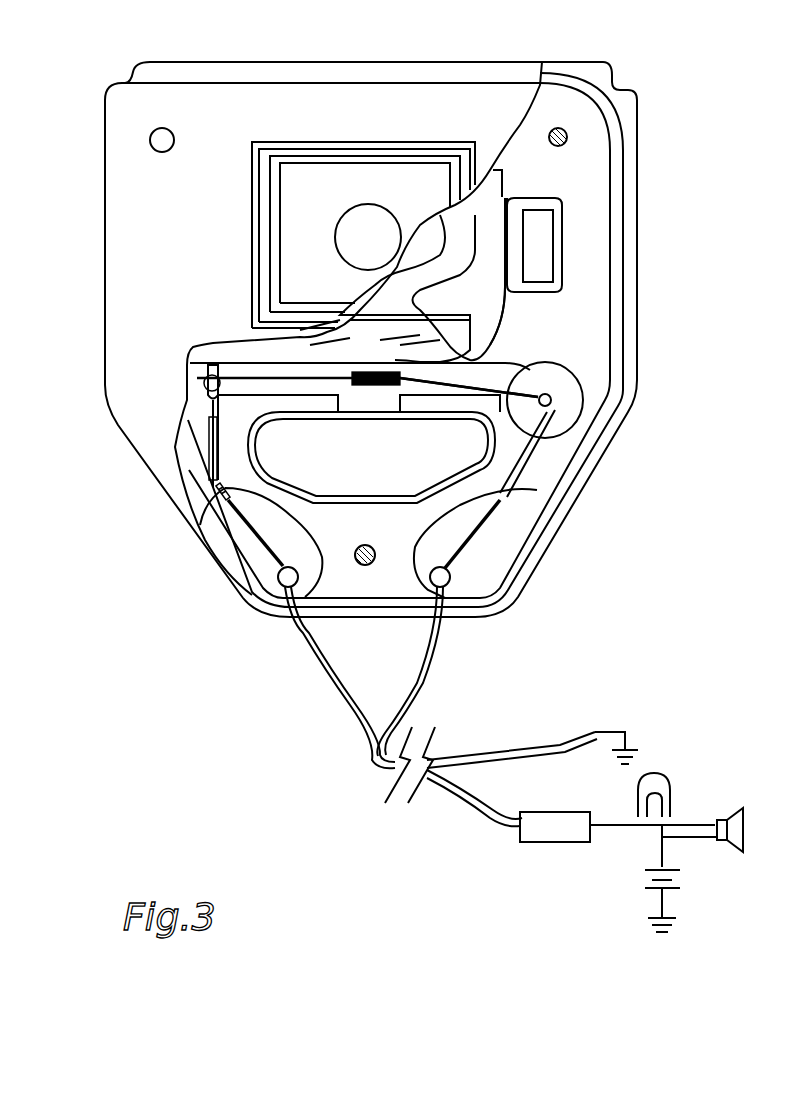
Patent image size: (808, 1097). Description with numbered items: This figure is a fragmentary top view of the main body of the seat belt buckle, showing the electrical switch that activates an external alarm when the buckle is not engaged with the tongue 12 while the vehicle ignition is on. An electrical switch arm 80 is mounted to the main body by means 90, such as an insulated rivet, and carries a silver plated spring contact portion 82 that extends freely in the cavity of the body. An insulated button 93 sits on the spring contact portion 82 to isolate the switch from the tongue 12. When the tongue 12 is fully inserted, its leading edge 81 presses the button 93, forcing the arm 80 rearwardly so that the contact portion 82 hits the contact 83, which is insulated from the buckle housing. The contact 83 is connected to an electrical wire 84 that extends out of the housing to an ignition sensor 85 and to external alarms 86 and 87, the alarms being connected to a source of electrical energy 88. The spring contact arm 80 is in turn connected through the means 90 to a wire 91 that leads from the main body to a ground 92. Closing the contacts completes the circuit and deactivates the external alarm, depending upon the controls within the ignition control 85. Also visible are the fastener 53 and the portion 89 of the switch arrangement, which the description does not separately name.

The tongue 12 is at (495, 308).
The leading edge of tongue 81 is at (510, 345).
The mounting means 90 is at (552, 400).
The wire 91 is at (505, 515).
The contact 83 is at (200, 374).
The spring contact portion 82 is at (285, 382).
The spring bar right portion 89 is at (480, 388).
The electrical switch arm 80 is at (408, 392).
The insulated button 93 is at (357, 385).
The electrical wire 84 is at (223, 497).
The screw 53 is at (365, 566).
The ground 92 is at (638, 752).
The ignition sensor 85 is at (520, 836).
The external alarm 86 is at (621, 842).
The external alarm 87 is at (704, 807).
The source of electrical energy 88 is at (676, 890).